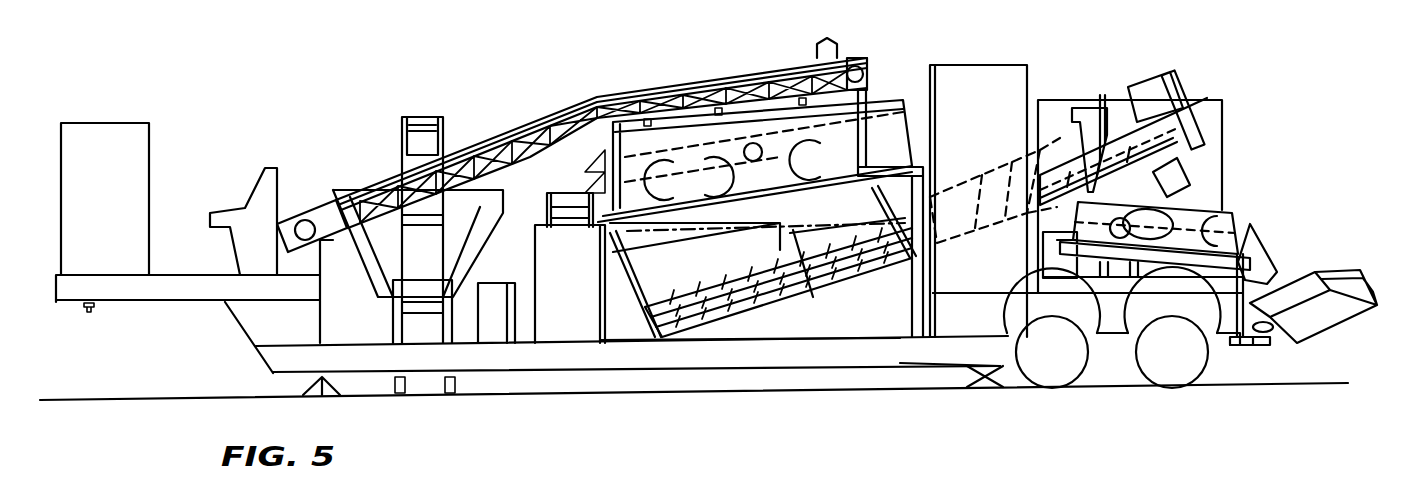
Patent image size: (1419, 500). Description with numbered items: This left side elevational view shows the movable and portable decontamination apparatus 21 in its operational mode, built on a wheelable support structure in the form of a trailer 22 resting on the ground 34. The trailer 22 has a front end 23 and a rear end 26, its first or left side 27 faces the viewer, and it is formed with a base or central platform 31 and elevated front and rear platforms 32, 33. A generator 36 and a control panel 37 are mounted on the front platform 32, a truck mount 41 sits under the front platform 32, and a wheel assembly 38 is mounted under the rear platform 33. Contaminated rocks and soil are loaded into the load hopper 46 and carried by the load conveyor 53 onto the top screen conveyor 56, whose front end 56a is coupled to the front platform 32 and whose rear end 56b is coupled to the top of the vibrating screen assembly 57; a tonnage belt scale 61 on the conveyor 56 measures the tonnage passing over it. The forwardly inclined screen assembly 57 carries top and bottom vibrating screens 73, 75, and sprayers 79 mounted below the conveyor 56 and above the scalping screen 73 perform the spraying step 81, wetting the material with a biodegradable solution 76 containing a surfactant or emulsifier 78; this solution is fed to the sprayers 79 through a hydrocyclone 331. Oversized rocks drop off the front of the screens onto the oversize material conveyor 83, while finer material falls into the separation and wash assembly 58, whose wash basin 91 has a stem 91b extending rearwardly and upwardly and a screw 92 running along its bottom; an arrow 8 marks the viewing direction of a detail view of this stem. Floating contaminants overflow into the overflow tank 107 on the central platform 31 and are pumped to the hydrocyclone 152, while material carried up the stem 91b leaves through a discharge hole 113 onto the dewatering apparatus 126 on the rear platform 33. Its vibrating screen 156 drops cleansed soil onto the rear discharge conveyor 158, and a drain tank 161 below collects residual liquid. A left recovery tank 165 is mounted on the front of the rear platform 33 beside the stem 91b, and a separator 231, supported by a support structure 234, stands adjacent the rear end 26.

The view direction arrow 8 is at (1190, 55).
The decontamination apparatus 21 is at (1271, 92).
The trailer 22 is at (588, 373).
The front end 23 is at (52, 292).
The rear end 26 is at (1250, 333).
The first or left side 27 is at (943, 355).
The central platform 31 is at (858, 340).
The front platform 32 is at (205, 273).
The rear platform 33 is at (990, 272).
The ground 34 is at (1325, 383).
The generator 36 is at (92, 213).
The control panel 37 is at (258, 212).
The wheel assembly 38 is at (1033, 375).
The truck mount 41 is at (94, 309).
The load hopper 46 is at (373, 267).
The load conveyor 53 is at (428, 115).
The top screen conveyor 56 is at (600, 129).
The front end 56a is at (300, 228).
The rear end 56b is at (853, 60).
The vibrating screen assembly 57 is at (902, 95).
The separation and wash assembly 58 is at (757, 318).
The tonnage belt scale 61 is at (525, 118).
The top screen 73 is at (717, 110).
The bottom screen 75 is at (750, 126).
The biodegradable solution 76 is at (793, 233).
The biodegradable surfactant or emulsifier 78 is at (495, 327).
The sprayers 79 is at (650, 127).
The spraying step 81 is at (513, 228).
The oversize material conveyor 83 is at (568, 198).
The wash basin 91 is at (703, 327).
The stem 91b is at (1143, 85).
The screw 92 is at (1183, 153).
The overflow tank 107 is at (546, 283).
The discharge hole 113 is at (1177, 187).
The dewatering apparatus 126 is at (1248, 204).
The hydrocyclone 152 is at (1095, 108).
The vibrating screen 156 is at (1103, 263).
The rear discharge conveyor 158 is at (1330, 317).
The drain tank 161 is at (1205, 283).
The left recovery tank 165 is at (964, 121).
The separator 231 is at (1222, 128).
The support structure 234 is at (1133, 267).
The hydrocyclone 331 is at (815, 50).